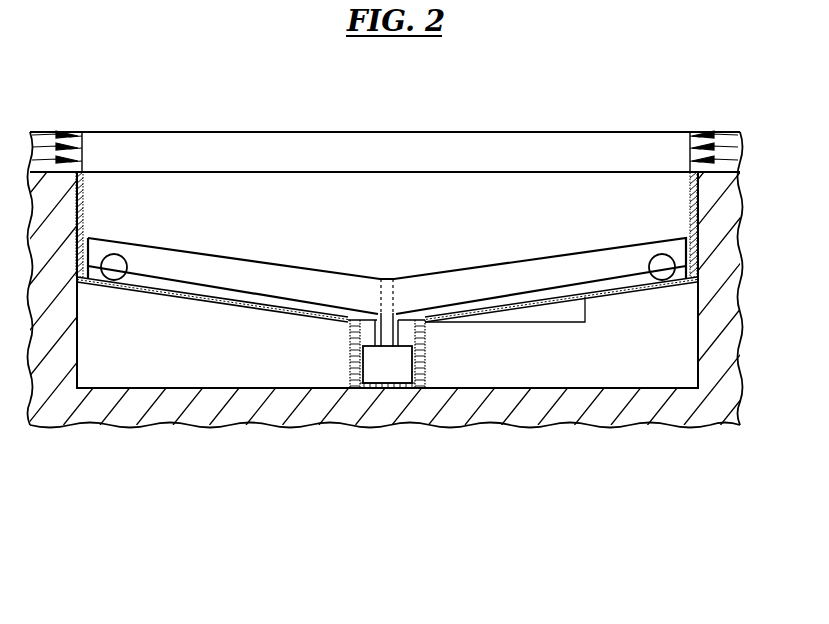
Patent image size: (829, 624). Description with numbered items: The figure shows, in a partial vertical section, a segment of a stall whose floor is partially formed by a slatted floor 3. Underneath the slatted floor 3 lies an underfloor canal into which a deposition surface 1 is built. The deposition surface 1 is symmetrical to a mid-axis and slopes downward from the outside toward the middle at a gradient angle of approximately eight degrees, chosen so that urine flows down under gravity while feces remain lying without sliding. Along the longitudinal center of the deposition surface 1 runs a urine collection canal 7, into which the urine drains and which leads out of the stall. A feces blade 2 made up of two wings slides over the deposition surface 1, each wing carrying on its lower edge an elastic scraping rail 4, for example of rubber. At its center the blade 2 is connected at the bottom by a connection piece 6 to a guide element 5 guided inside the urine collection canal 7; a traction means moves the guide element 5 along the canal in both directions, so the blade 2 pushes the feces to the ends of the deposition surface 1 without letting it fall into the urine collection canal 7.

The deposition surface 1 is at (120, 278).
The feces blade 2 is at (331, 281).
The slatted floor 3 is at (412, 137).
The elastic scraping rail 4 is at (172, 284).
The guide element 5 is at (387, 362).
The connection piece 6 is at (392, 337).
The urine collection canal 7 is at (363, 334).